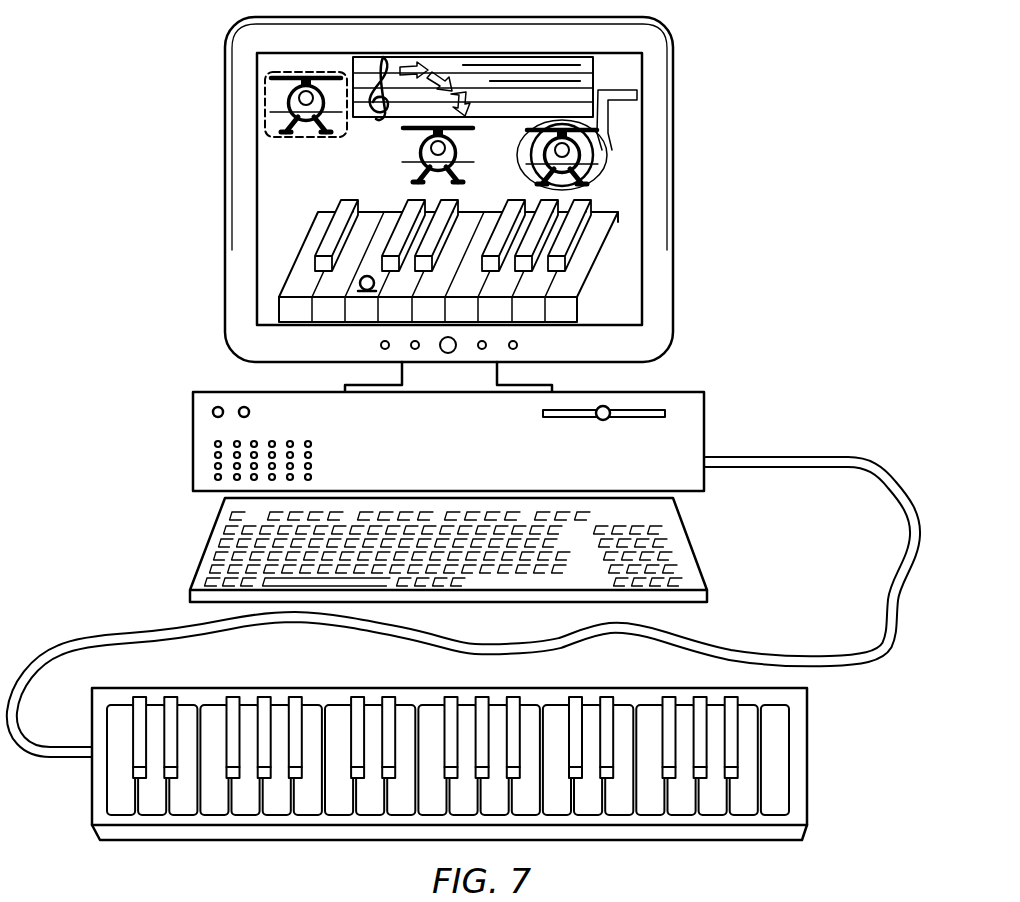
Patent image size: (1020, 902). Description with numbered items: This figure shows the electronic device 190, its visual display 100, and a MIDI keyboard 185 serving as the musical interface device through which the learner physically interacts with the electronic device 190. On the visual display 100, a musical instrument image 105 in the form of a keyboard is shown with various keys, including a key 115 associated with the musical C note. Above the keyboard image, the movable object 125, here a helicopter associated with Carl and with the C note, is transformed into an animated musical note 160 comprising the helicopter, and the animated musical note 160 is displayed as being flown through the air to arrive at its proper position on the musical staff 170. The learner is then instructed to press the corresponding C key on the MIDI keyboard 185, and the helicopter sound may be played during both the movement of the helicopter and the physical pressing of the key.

The visual display 100 is at (654, 18).
The musical instrument image 105 is at (507, 246).
The key 115 is at (398, 208).
The movable object 125 is at (415, 148).
The animated music note 160 is at (598, 182).
The musical staff image 170 is at (593, 75).
The MIDI keyboard 185 is at (808, 748).
The electronic device 190 is at (706, 417).